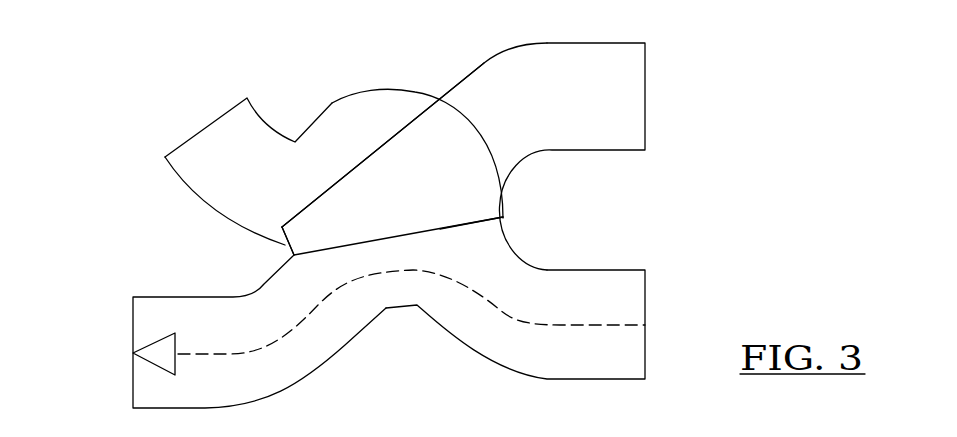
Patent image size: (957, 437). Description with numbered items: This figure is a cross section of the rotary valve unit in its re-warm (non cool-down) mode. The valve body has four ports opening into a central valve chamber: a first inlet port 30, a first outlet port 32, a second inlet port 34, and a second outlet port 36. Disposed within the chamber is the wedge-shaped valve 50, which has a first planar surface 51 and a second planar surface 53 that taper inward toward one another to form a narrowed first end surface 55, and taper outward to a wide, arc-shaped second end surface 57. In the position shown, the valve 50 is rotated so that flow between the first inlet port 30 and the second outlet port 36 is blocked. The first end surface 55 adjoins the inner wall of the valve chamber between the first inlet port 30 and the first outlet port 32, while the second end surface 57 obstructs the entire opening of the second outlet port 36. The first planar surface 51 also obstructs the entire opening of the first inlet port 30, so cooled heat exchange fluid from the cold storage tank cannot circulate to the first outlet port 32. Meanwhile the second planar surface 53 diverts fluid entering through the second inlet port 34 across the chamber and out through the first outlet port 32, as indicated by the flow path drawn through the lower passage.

The first inlet port 30 is at (205, 125).
The first outlet port 32 is at (132, 340).
The second inlet port 34 is at (645, 305).
The second outlet port 36 is at (647, 98).
The valve 50 is at (418, 135).
The first planar surface 51 is at (337, 177).
The second planar surface 53 is at (473, 223).
The first end surface 55 is at (287, 247).
The second end surface 57 is at (477, 127).